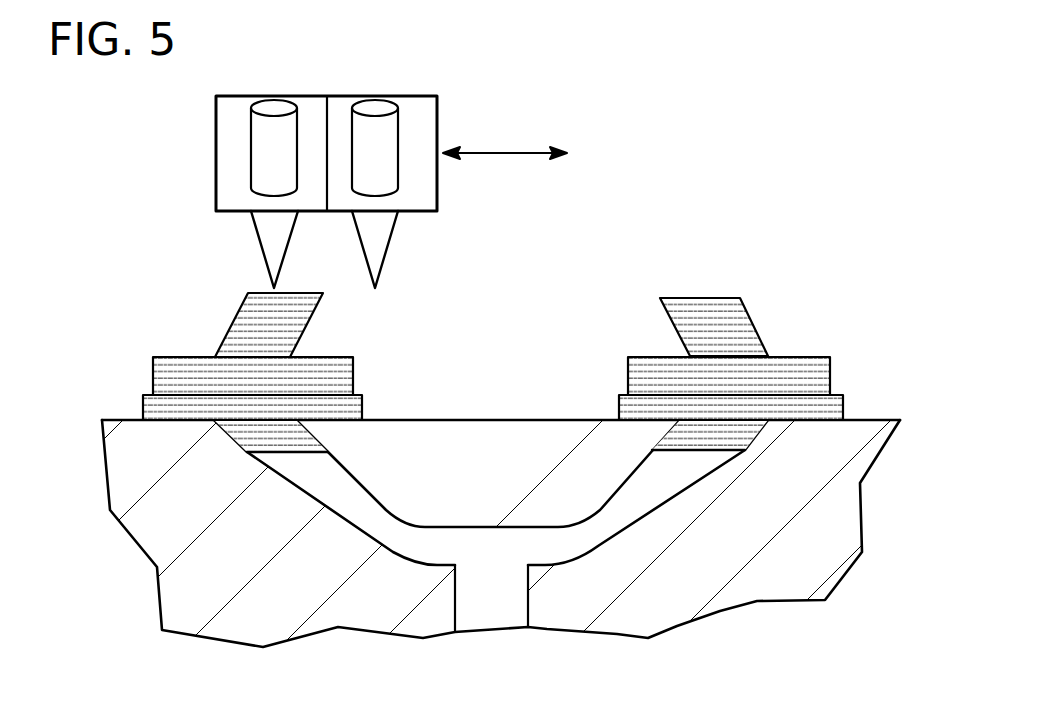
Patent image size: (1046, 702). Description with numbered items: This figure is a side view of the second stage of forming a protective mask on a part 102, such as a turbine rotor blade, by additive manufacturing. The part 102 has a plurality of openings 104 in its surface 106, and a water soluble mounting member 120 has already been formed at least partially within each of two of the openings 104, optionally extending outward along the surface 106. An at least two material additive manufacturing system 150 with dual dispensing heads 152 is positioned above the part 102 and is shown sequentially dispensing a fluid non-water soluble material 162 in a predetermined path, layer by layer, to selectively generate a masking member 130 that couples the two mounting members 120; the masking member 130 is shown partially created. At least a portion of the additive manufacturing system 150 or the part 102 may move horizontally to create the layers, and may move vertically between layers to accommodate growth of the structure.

The part 102 is at (813, 522).
The openings 104 is at (227, 432).
The surface 106 is at (860, 418).
The mounting member 120 is at (835, 405).
The masking member 130 is at (245, 325).
The fluid non-water soluble material 162 is at (495, 321).
The additive manufacturing system 150 is at (392, 91).
The dispensing heads 152 is at (363, 254).